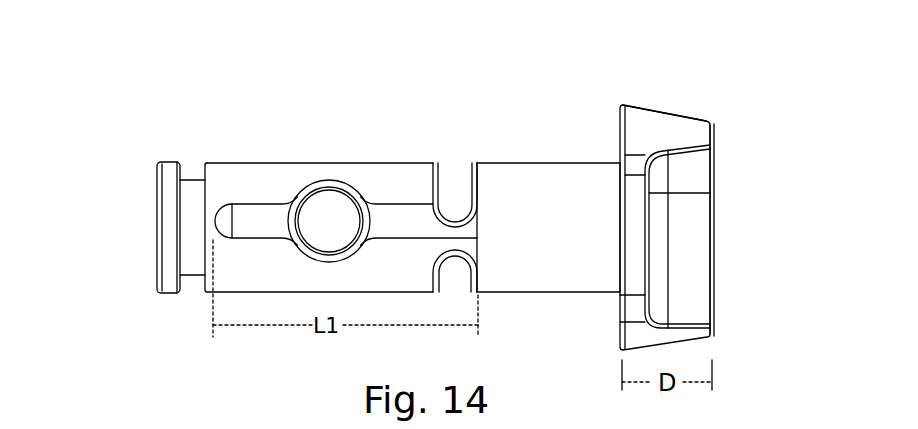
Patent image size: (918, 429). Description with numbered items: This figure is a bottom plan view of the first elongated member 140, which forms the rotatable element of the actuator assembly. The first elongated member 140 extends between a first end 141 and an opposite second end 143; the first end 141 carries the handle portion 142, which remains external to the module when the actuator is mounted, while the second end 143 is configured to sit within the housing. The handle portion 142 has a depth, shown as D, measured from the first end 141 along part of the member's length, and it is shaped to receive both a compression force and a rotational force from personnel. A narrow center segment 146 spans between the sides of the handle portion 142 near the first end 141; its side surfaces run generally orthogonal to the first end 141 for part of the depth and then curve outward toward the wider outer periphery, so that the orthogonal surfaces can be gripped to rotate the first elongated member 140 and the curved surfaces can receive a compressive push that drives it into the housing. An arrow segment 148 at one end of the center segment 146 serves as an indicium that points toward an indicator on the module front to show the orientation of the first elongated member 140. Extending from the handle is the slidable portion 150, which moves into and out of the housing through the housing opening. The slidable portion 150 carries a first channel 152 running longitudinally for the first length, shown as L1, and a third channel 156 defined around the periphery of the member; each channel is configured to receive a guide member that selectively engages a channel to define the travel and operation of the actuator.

The first elongated member 140 is at (148, 208).
The first end 141 is at (715, 138).
The handle portion 142 is at (687, 112).
The second end 143 is at (156, 170).
The center segment 146 is at (713, 243).
The arrow segment 148 is at (654, 111).
The slidable portion 150 is at (543, 163).
The first channel 152 is at (250, 217).
The third channel 156 is at (437, 174).